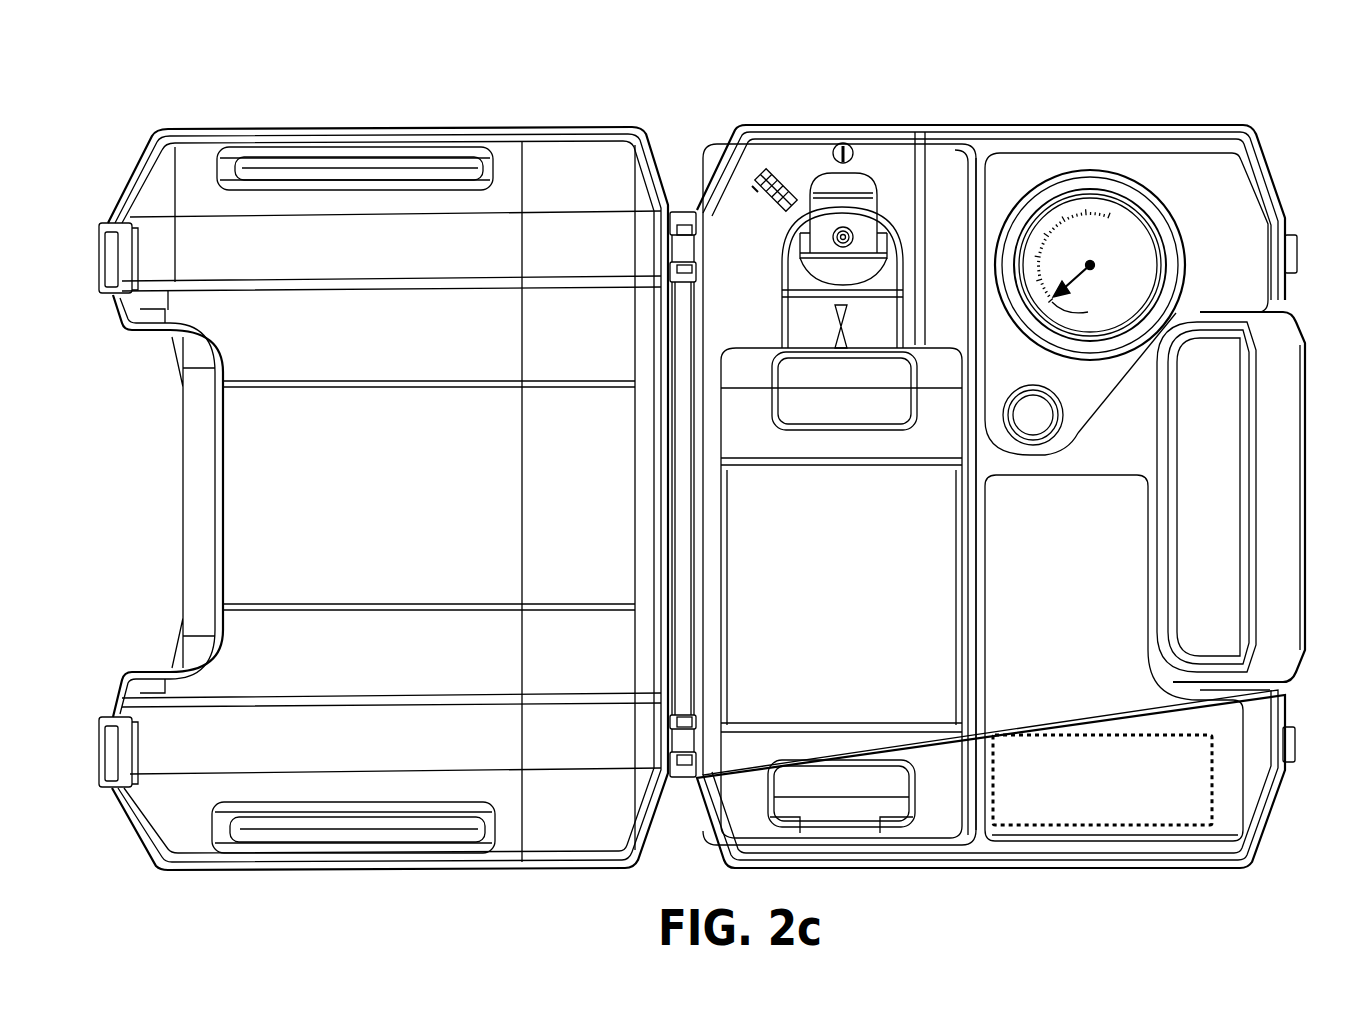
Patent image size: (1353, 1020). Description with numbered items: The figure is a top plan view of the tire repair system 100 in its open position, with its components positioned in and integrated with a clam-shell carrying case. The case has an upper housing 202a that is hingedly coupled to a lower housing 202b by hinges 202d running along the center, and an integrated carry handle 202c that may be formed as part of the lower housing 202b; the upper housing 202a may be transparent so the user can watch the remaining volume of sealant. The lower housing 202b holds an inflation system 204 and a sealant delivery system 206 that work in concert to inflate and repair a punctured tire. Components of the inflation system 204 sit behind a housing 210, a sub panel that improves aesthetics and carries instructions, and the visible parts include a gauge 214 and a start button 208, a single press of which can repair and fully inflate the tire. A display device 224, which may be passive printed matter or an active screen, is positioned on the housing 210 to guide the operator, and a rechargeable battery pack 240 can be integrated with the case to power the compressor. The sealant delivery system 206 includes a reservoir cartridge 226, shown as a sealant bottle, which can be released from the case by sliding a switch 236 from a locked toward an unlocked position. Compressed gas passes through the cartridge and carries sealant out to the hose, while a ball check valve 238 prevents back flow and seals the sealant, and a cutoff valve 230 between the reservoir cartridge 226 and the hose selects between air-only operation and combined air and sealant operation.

The tire repair system 100 is at (165, 90).
The upper housing 202a is at (386, 130).
The lower housing 202b is at (1118, 866).
The integrated carry handle 202c is at (1250, 445).
The hinges 202d is at (680, 208).
The inflation system 204 is at (1126, 100).
The sealant delivery system 206 is at (862, 100).
The start button 208 is at (1030, 392).
The housing 210 is at (963, 242).
The gauge 214 is at (1148, 218).
The display device 224 is at (1110, 482).
The reservoir cartridge 226 is at (750, 355).
The cutoff valve 230 is at (856, 153).
The switch 236 is at (780, 180).
The valve 238 is at (848, 332).
The rechargeable battery pack 240 is at (1082, 736).